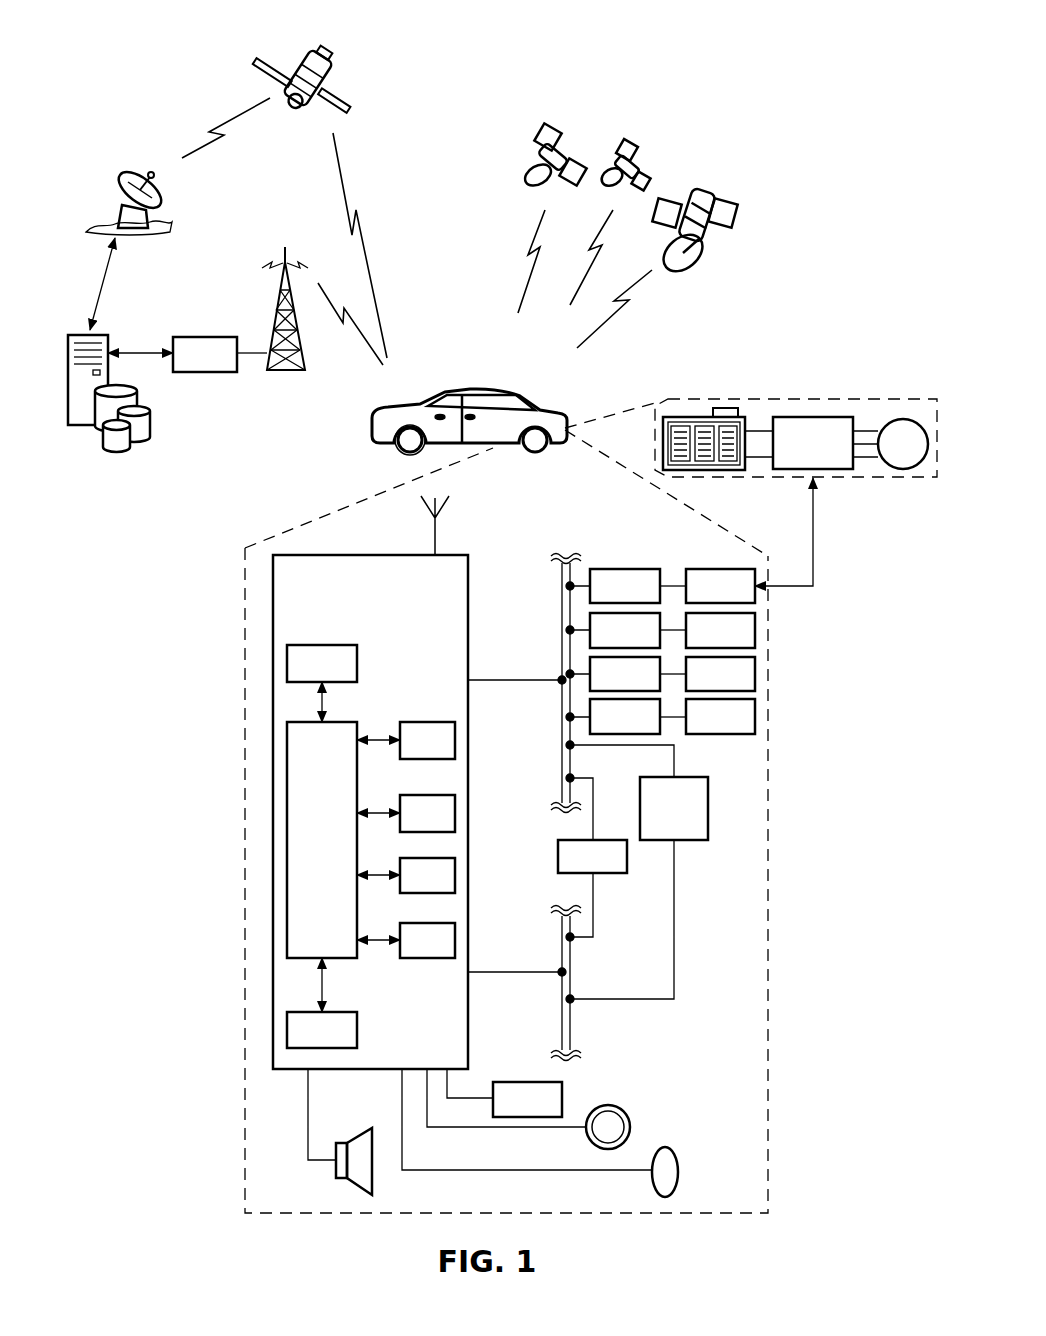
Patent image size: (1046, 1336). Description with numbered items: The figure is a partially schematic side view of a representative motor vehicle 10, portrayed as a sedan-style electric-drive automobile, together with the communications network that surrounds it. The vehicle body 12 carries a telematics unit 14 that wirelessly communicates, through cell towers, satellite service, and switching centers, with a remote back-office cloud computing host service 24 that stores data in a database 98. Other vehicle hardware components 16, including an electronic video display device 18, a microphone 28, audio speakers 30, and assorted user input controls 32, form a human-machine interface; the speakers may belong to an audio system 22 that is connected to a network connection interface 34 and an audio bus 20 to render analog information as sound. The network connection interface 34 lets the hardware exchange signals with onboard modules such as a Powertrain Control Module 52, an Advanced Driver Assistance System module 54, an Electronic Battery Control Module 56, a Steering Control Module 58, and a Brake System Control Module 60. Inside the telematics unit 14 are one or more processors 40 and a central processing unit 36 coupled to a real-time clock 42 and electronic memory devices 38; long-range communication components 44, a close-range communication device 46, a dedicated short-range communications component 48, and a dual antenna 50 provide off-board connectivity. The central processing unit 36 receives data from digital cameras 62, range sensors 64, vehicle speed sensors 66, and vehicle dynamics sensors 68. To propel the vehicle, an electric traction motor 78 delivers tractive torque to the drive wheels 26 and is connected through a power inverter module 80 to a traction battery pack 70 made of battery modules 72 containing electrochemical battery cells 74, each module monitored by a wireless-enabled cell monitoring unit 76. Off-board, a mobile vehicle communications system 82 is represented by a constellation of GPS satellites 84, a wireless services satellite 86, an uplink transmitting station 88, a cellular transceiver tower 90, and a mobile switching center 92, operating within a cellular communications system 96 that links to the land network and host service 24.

The motor vehicle 10 is at (580, 400).
The vehicle body 12 is at (400, 405).
The telematics unit 14 is at (470, 718).
The vehicle hardware components 16 is at (362, 500).
The electronic video display device 18 is at (527, 1099).
The audio bus 20 is at (562, 1005).
The audio system 22 is at (674, 808).
The back-office cloud computing host service 24 is at (74, 427).
The drive wheels 26 is at (397, 447).
The microphone 28 is at (680, 1160).
The audio speakers 30 is at (362, 1185).
The user input controls 32 is at (630, 1118).
The network connection interface 34 is at (562, 740).
The central processing unit 36 is at (343, 867).
The electronic memory device 38 is at (322, 1030).
The processor 40 is at (322, 683).
The real-time clock 42 is at (427, 740).
The long-range communication components 44 is at (427, 813).
The close-range communication device 46 is at (427, 875).
The dedicated short-range communications component 48 is at (427, 940).
The dual antenna 50 is at (437, 552).
The Powertrain Control Module 52 is at (638, 586).
The Advanced Driver Assistance System module 54 is at (749, 540).
The Electronic Battery Control Module 56 is at (592, 856).
The Steering Control Module 58 is at (638, 630).
The Brake System Control Module 60 is at (720, 630).
The digital camera 62 is at (638, 674).
The range sensor 64 is at (720, 674).
The vehicle speed sensor 66 is at (638, 716).
The vehicle dynamics sensor 68 is at (720, 716).
The traction battery pack 70 is at (725, 472).
The battery module 72 is at (678, 417).
The electrochemical battery cells 74 is at (663, 435).
The wireless-enabled cell monitoring unit 76 is at (722, 408).
The electric traction motor 78 is at (900, 420).
The power inverter module 80 is at (788, 417).
The mobile vehicle communications system 82 is at (185, 38).
The constellation of GPS satellites 84 is at (653, 112).
The wireless services satellite 86 is at (325, 62).
The uplink transmitting station 88 is at (122, 222).
The cellular transceiver tower 90 is at (272, 330).
The mobile switching center 92 is at (195, 337).
The cellular communications system 96 is at (255, 397).
The database 98 is at (148, 420).